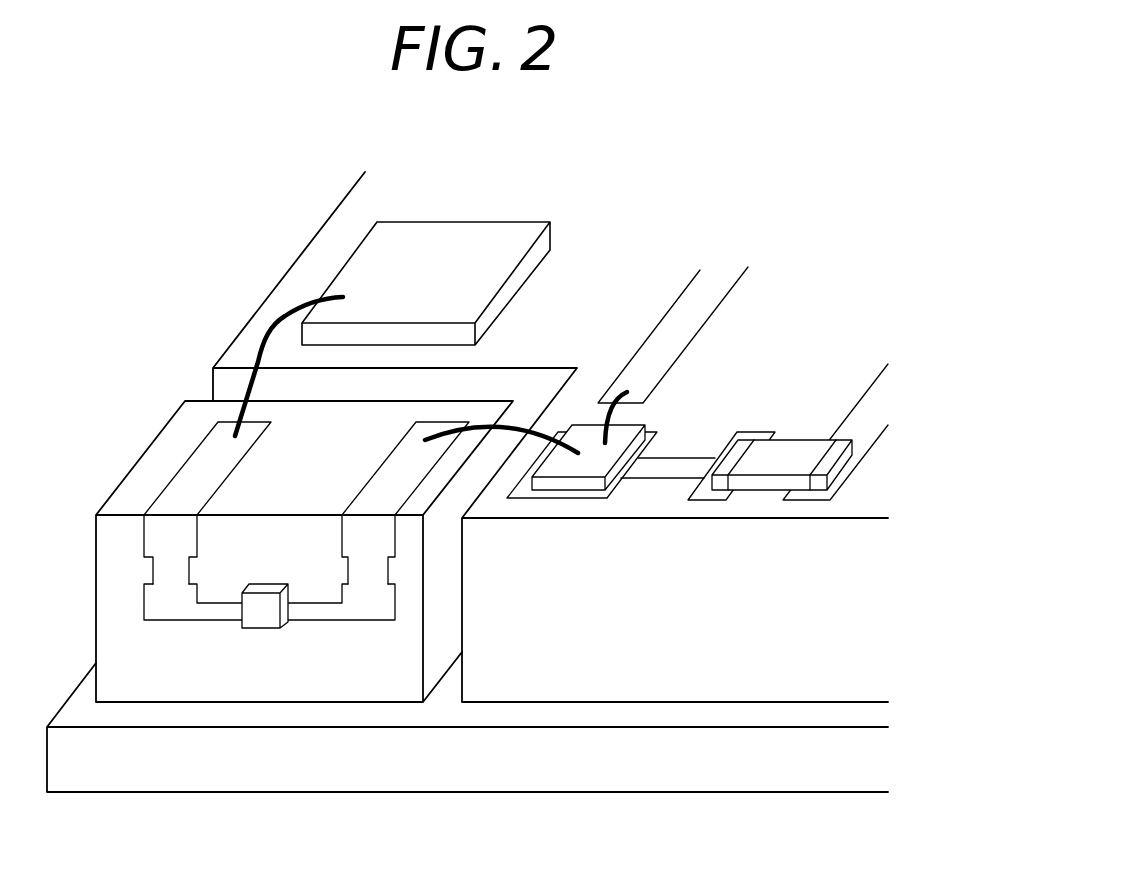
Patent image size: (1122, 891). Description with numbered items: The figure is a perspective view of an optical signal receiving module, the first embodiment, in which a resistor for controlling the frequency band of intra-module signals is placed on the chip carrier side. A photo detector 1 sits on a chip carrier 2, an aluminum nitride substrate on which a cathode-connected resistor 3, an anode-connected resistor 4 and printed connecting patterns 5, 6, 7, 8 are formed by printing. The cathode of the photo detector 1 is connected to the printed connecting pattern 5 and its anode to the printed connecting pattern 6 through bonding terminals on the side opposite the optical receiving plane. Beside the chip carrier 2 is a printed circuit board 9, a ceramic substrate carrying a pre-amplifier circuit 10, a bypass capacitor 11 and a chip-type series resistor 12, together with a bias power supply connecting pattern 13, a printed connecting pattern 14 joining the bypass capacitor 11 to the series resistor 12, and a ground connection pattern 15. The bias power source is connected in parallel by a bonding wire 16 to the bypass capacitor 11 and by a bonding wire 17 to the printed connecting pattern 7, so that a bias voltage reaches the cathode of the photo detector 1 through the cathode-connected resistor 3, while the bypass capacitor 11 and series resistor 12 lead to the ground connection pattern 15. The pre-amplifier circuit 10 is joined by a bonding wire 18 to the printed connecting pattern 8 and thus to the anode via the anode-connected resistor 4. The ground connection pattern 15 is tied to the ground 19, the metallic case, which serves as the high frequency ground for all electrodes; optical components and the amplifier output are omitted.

The photo detector 1 is at (260, 612).
The chip carrier 2 is at (144, 680).
The cathode-connected resistor 3 is at (365, 572).
The anode-connected resistor 4 is at (165, 572).
The printed connecting pattern 5 is at (369, 606).
The printed connecting pattern 6 is at (169, 606).
The printed connecting pattern 7 is at (405, 458).
The printed connecting pattern 8 is at (213, 458).
The printed circuit board 9 is at (540, 683).
The pre-amplifier circuit 10 is at (478, 240).
The bypass capacitor 11 is at (567, 483).
The series resistor 12 is at (759, 483).
The bias power supply connecting pattern 13 is at (690, 308).
The printed connecting pattern 14 is at (687, 468).
The ground connection pattern 15 is at (870, 412).
The bonding wire 16 is at (598, 402).
The bonding wire 17 is at (527, 425).
The bonding wire 18 is at (283, 312).
The ground 19 is at (770, 778).